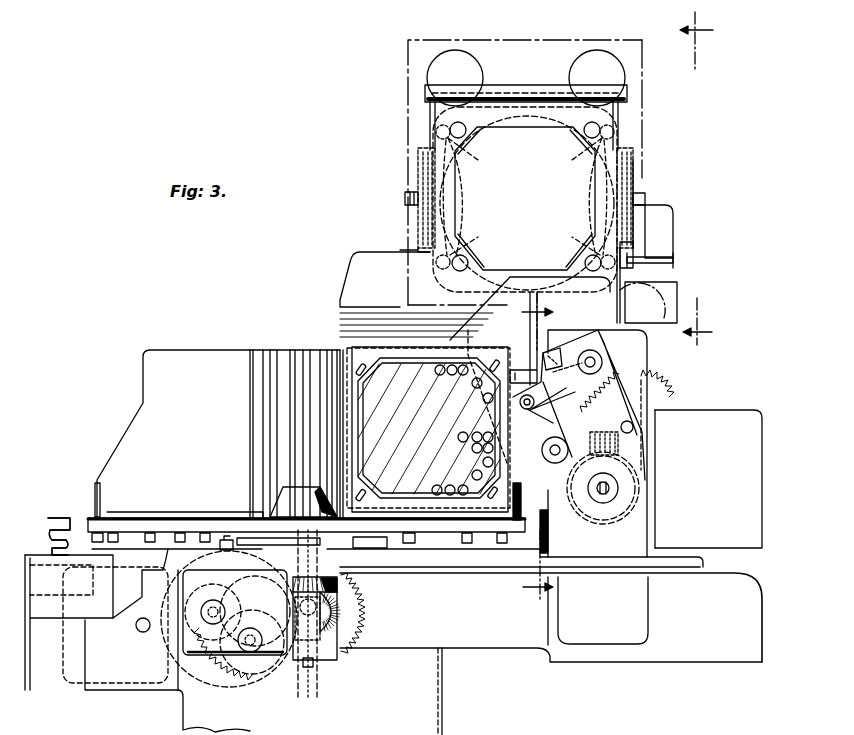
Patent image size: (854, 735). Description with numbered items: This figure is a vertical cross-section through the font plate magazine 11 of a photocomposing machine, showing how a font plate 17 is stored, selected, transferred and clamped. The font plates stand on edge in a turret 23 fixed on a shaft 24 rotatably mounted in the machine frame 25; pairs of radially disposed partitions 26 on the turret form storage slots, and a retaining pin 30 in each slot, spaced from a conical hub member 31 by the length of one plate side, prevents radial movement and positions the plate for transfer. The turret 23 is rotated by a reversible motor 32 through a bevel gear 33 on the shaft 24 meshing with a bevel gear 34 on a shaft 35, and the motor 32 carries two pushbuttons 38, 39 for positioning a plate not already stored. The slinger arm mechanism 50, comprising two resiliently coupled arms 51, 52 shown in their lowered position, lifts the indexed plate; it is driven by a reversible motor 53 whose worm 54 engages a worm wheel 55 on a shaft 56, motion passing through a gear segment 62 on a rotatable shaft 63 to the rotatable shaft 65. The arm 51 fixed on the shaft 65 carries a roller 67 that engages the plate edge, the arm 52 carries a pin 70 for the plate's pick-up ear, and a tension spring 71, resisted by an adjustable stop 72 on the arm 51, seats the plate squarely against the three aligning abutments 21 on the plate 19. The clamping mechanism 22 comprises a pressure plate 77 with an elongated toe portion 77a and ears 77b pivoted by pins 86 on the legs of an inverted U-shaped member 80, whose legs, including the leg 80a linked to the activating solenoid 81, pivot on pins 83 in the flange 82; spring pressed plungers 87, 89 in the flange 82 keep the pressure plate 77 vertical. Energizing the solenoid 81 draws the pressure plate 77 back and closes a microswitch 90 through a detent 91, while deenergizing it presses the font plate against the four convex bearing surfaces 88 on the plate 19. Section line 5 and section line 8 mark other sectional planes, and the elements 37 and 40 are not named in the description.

The section line 5- 5 is at (537, 451).
The section line 8- 8 is at (696, 179).
The font plate magazine 11 is at (268, 345).
The font plate 17 is at (357, 360).
The plate 19 is at (528, 38).
The abutments 21 is at (428, 72).
The clamping mechanism 22 is at (640, 158).
The turret 23 is at (162, 525).
The shaft 24 is at (317, 560).
The machine frame 25 is at (270, 553).
The partitions 26 is at (280, 398).
The retaining pins 30 is at (100, 489).
The conical hub member 31 is at (288, 500).
The reversible motor 32 is at (73, 667).
The bevel gear 33 is at (337, 580).
The bevel gear 34 is at (337, 620).
The shaft 35 is at (308, 647).
The screws 37 is at (147, 543).
The pushbutton 38 is at (72, 493).
The pushbutton 39 is at (59, 536).
The bracket 40 is at (377, 542).
The slinger arm mechanism 50 is at (652, 373).
The arm 51 is at (570, 425).
The arm 52 is at (534, 399).
The reversible motor 53 is at (742, 413).
The worm 54 is at (622, 447).
The worm wheel 55 is at (620, 522).
The shaft 56 is at (603, 492).
The gear segment 62 is at (660, 395).
The rotatable shaft 63 is at (633, 427).
The rotatable shaft 65 is at (594, 362).
The roller 67 is at (565, 462).
The pin 70 is at (520, 405).
The tension spring 71 is at (603, 392).
The adjustable stop 72 is at (548, 352).
The pressure plate 77 is at (528, 122).
The elongated toe portion 77a is at (372, 276).
The ear 77b is at (420, 182).
The inverted U-shaped member 80 is at (537, 92).
The leg 80a is at (432, 112).
The activating solenoid 81 is at (663, 222).
The flange 82 is at (488, 95).
The pins 83 is at (455, 192).
The pins 86 is at (405, 200).
The spring pressed plungers 87 is at (367, 367).
The convex bearing surfaces 88 is at (472, 128).
The plungers 89 is at (453, 157).
The microswitch 90 is at (668, 283).
The detent 91 is at (660, 258).